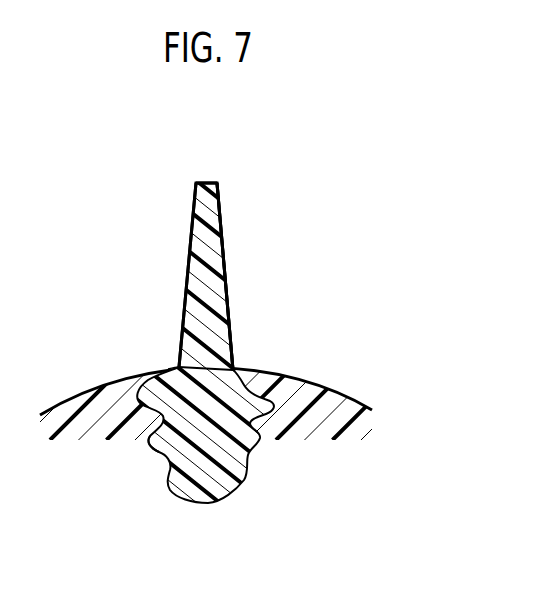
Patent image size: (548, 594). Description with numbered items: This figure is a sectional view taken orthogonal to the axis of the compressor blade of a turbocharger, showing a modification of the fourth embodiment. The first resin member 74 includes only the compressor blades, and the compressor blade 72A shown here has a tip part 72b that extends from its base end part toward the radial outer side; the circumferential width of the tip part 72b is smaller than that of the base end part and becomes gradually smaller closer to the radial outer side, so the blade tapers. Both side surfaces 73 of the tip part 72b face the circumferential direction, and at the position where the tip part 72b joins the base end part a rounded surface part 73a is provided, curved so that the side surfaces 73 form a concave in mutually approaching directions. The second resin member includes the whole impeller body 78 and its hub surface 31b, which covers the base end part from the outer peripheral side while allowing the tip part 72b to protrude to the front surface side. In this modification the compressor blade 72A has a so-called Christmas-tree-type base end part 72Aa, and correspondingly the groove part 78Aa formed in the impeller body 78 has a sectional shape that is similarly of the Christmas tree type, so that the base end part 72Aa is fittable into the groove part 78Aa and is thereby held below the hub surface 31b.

The impeller body 78 is at (364, 421).
The hub surface 31b is at (338, 392).
The compressor blade 72A is at (260, 357).
The base end part 72Aa is at (236, 408).
The tip part 72b is at (224, 313).
The first resin member 74 is at (203, 212).
The side surfaces 73 is at (190, 245).
The rounded surface part 73a is at (175, 369).
The groove part 78Aa is at (157, 446).